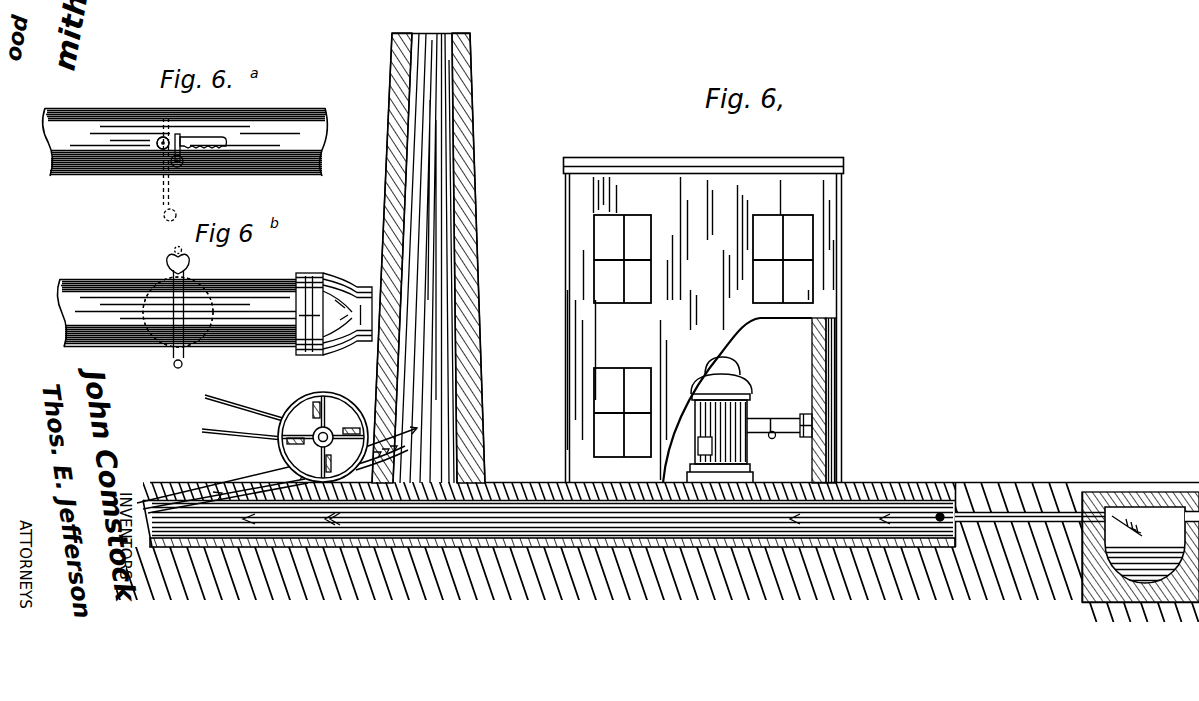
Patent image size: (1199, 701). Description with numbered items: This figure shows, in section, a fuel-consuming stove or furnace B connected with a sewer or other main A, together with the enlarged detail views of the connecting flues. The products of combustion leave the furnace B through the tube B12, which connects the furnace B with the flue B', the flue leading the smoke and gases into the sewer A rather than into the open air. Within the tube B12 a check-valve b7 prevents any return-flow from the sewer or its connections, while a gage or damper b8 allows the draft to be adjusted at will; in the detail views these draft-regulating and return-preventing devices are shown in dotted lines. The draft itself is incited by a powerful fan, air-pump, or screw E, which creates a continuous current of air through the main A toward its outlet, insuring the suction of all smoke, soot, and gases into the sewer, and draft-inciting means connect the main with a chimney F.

In FIG. 6A, the tube B12 is at (272, 152).
In FIG. 6B, the tube B12 is at (176, 308).
In FIG. 6, the tube B12 is at (775, 421).
In FIG. 6A, the gage or damper b8 is at (160, 180).
In FIG. 6B, the gage or damper b8 is at (168, 262).
In FIG. 6, the gage or damper b8 is at (772, 439).
In FIG. 6B, the check-valve b7 is at (350, 280).
In FIG. 6, the check-valve b7 is at (804, 439).
In FIG. 6, the furnace B is at (734, 420).
In FIG. 6, the flue B' is at (843, 400).
In FIG. 6, the chimney F is at (435, 258).
In FIG. 6, the fan, air-pump, or screw E is at (323, 437).
In FIG. 6, the sewer A is at (733, 528).